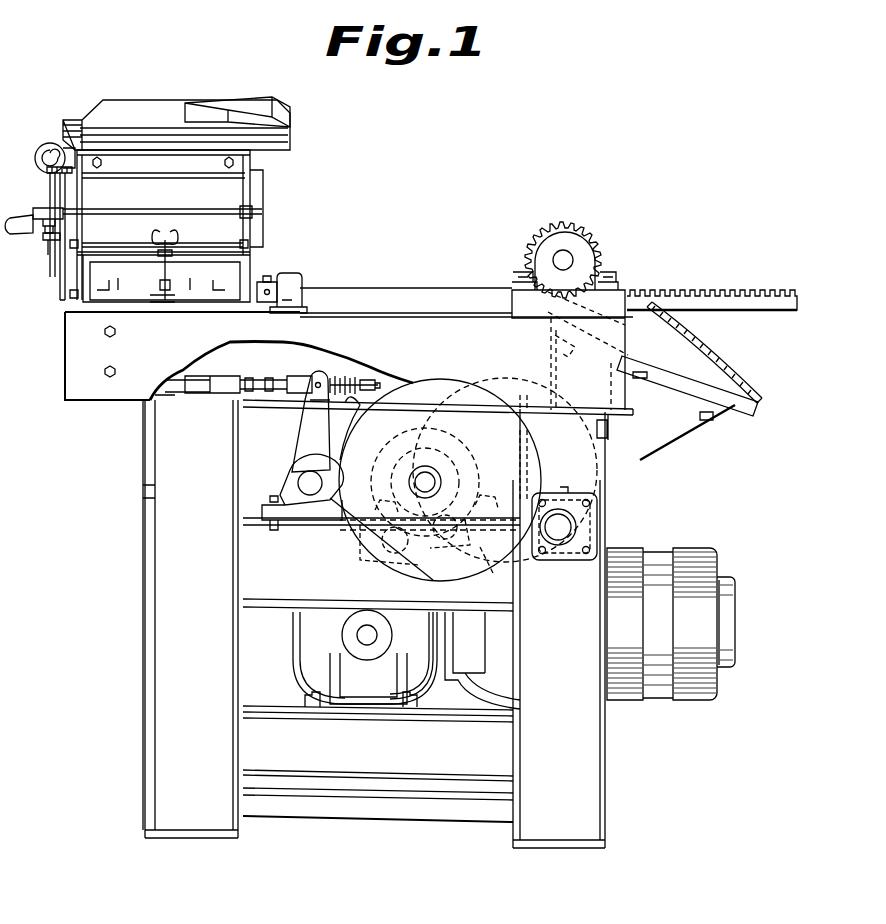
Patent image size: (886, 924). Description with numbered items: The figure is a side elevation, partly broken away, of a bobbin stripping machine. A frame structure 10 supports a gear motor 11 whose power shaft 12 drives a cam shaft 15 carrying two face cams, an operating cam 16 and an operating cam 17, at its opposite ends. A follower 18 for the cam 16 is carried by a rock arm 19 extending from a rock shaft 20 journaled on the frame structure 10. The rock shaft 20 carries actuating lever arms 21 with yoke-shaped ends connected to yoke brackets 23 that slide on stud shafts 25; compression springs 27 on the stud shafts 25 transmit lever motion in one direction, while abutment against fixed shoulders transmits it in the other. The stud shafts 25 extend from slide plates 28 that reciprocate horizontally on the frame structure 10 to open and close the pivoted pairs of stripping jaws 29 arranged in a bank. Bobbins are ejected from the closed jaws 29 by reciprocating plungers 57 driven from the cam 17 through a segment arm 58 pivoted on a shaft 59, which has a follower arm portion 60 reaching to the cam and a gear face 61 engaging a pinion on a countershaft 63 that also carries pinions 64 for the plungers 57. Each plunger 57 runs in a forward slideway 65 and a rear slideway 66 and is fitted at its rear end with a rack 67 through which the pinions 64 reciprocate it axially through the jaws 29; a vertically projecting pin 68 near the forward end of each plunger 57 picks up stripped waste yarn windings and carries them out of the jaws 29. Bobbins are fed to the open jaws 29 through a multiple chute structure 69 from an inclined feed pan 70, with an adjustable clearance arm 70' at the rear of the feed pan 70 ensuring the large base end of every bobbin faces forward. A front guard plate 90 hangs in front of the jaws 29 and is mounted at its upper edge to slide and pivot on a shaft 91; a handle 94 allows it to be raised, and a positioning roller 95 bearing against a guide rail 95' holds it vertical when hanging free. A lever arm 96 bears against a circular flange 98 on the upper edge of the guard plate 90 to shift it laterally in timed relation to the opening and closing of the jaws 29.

The frame structure 10 is at (172, 561).
The gear motor 11 is at (665, 701).
The power shaft 12 is at (365, 635).
The cam shaft 15 is at (425, 482).
The operating cam 16 is at (405, 378).
The operating cam 17 is at (512, 378).
The follower 18 is at (388, 565).
The rock arm 19 is at (352, 542).
The rock shaft 20 is at (310, 495).
The actuating lever arm 21 is at (305, 447).
The yoke bracket 23 is at (302, 376).
The stud shaft 25 is at (277, 376).
The compression spring 27 is at (339, 378).
The slide plate 28 is at (249, 376).
The stripping jaw 29 is at (180, 295).
The reciprocating plunger 57 is at (401, 285).
The segment arm 58 is at (685, 435).
The shaft 59 is at (566, 527).
The follower arm portion 60 is at (497, 569).
The gear face 61 is at (746, 362).
The countershaft 63 is at (560, 258).
The pinion 64 is at (598, 238).
The forward slideway 65 is at (294, 273).
The rear slideway 66 is at (498, 283).
The rack 67 is at (715, 285).
The vertically projecting pin 68 is at (276, 276).
The multiple chute structure 69 is at (160, 260).
The inclined feed pan 70 is at (176, 121).
The adjustable clearance arm 70' is at (237, 101).
The front guard plate 90 is at (60, 296).
The shaft 91 is at (46, 150).
The handle 94 is at (24, 209).
The positioning roller 95 is at (23, 240).
The guide rail 95' is at (36, 259).
The lever arm 96 is at (46, 186).
The circular flange 98 is at (47, 143).